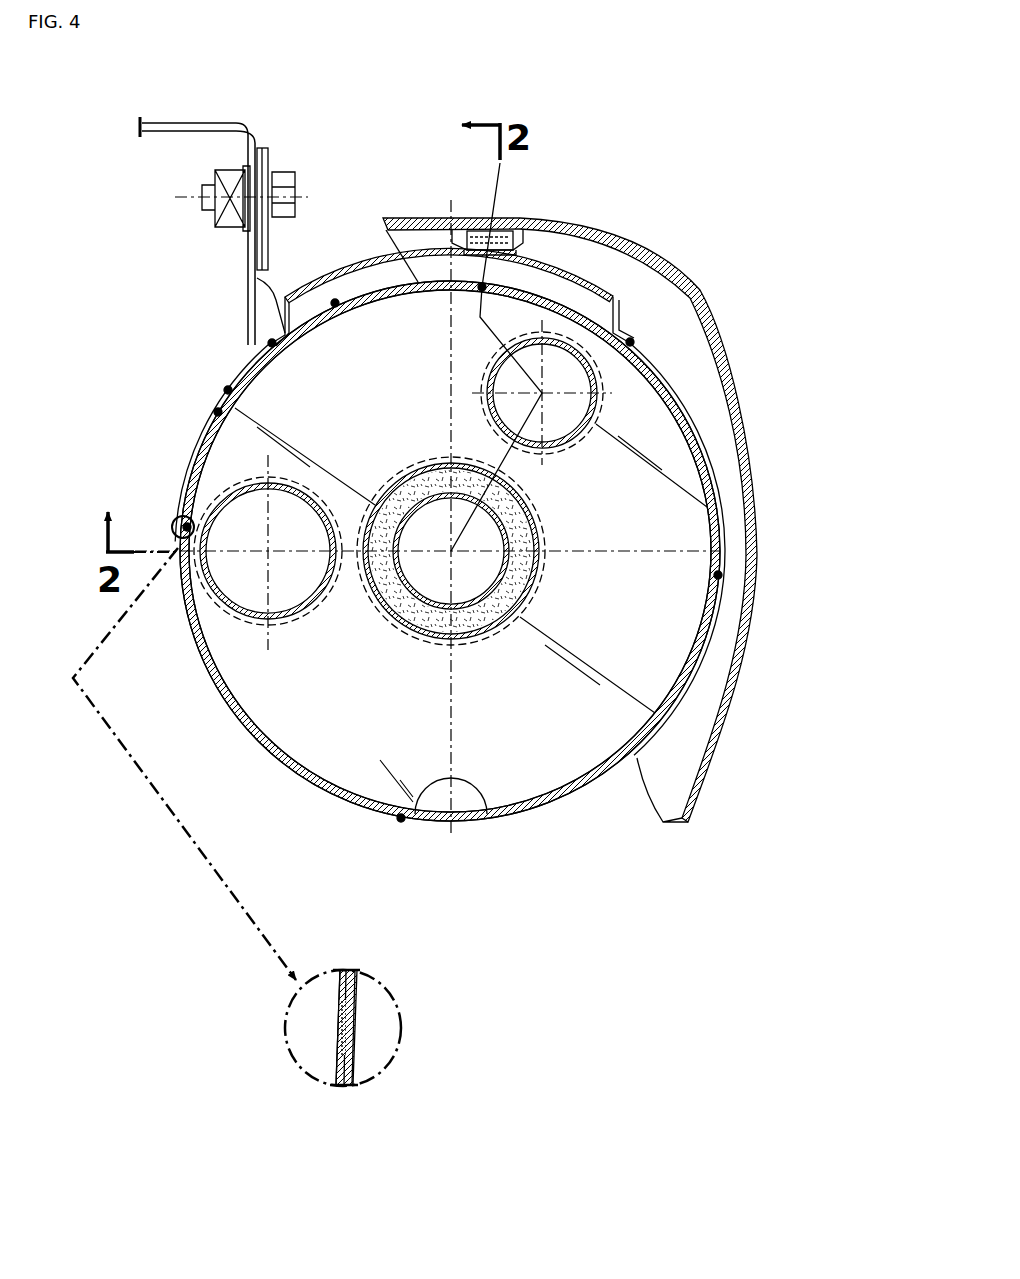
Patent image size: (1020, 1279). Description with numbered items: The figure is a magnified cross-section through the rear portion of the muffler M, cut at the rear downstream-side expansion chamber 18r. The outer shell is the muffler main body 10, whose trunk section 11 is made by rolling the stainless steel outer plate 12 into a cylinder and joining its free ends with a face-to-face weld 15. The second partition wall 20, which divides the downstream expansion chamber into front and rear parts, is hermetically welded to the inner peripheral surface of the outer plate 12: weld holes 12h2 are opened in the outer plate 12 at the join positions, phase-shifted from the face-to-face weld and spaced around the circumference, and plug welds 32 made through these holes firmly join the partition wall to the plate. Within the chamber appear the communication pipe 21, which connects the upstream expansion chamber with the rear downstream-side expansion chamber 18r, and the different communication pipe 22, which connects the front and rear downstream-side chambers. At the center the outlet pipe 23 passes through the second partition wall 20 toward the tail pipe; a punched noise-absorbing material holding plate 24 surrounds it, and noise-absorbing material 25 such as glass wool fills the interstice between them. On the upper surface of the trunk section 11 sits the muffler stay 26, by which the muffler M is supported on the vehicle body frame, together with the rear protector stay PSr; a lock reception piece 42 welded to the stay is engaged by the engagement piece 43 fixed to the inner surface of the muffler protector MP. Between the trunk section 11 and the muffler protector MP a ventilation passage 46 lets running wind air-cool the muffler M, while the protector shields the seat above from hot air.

The muffler main body 10 is at (469, 824).
The trunk section 11 is at (357, 806).
The outer plate 12 is at (267, 760).
The weld holes 12h2 is at (352, 1020).
The face-to-face weld 15 is at (214, 412).
The rear downstream-side expansion chamber 18r is at (406, 710).
The second partition wall 20 is at (639, 402).
The communication pipe 21 is at (314, 606).
The different communication pipe 22 is at (578, 442).
The outlet pipe 23 is at (414, 494).
The noise-absorbing material holding plate 24 is at (536, 590).
The noise-absorbing material 25 is at (484, 632).
The muffler stay 26 is at (250, 291).
The plug welds 32 is at (480, 289).
The lock reception piece 42 is at (478, 230).
The engagement piece 43 is at (548, 240).
The ventilation passage 46 is at (664, 310).
The muffler M is at (553, 822).
The muffler protector MP is at (739, 399).
The rear protector stay PSr is at (368, 258).